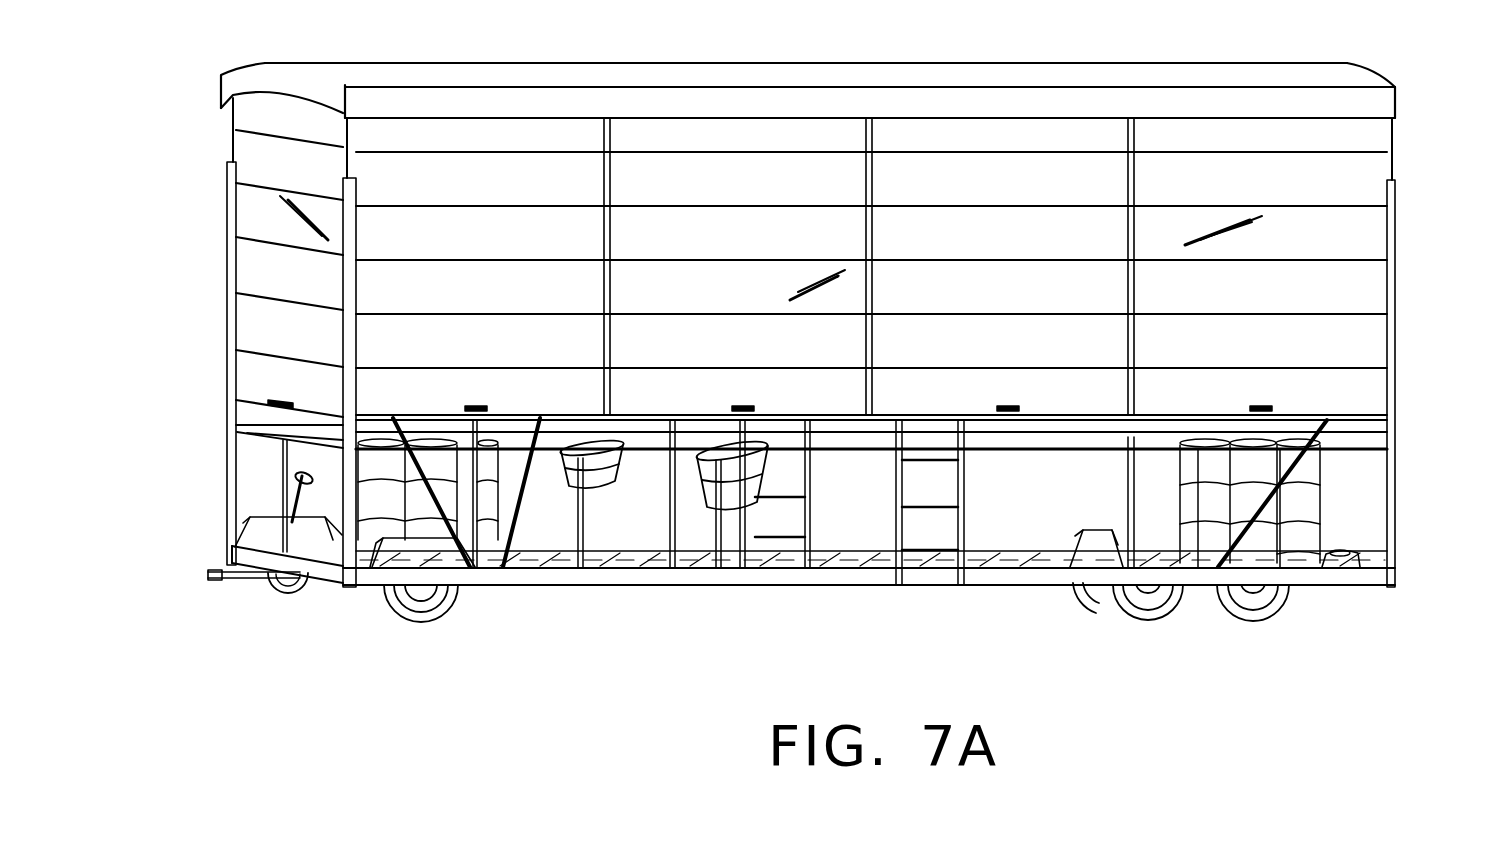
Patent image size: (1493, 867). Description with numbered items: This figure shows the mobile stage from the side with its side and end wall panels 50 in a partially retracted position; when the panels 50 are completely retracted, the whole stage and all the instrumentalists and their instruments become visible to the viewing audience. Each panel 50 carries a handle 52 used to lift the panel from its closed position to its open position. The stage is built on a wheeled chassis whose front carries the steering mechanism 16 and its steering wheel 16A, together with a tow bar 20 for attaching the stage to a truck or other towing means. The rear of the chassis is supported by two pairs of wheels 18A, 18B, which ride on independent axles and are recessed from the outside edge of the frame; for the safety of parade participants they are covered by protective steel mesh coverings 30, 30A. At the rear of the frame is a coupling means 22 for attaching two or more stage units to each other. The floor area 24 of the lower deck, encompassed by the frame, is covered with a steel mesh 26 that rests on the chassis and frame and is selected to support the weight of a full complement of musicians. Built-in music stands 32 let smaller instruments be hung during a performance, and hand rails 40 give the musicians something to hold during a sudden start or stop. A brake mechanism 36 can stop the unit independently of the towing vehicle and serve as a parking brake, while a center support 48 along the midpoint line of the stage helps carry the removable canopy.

The steering mechanism 16 is at (297, 583).
The steering wheel 16A is at (293, 490).
The rear wheel 18A is at (1145, 614).
The rear wheel 18B is at (1078, 594).
The tow bar 20 is at (212, 578).
The coupling means 22 is at (1343, 554).
The floor area of the lower deck 24 is at (622, 580).
The steel mesh 26 is at (624, 553).
The protective steel mesh covering 30 is at (414, 558).
The protective steel mesh covering 30A is at (1178, 557).
The music stand 32 is at (583, 510).
The brake mechanism 36 is at (492, 586).
The hand rails 40 is at (262, 437).
The center support 48 is at (1357, 297).
The panel 50 is at (255, 255).
The handle 52 is at (483, 405).